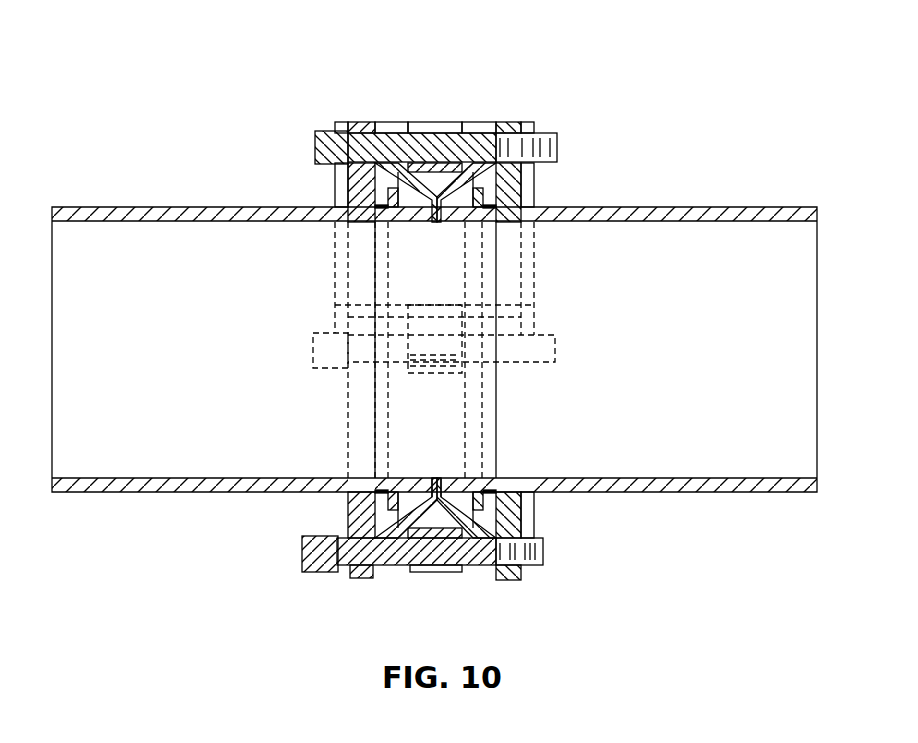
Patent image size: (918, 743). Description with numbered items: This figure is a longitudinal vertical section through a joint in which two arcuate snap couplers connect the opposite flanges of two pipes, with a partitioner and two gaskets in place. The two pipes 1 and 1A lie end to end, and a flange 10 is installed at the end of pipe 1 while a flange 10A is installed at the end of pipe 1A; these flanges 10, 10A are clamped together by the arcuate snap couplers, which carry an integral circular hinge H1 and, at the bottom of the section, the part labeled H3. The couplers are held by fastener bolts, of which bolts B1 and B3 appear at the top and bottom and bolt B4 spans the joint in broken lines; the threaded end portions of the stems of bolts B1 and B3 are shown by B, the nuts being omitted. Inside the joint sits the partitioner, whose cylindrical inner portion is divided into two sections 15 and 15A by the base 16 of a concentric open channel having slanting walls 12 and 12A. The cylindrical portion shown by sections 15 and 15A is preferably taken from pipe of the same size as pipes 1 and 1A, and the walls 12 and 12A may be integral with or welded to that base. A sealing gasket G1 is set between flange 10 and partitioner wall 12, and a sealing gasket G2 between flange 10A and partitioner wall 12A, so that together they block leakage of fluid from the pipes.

The pipe 1 is at (78, 208).
The pipe 1A is at (670, 207).
The flange 10 is at (363, 123).
The flange 10A is at (505, 128).
The threaded end portions of bolt stems B is at (557, 132).
The fastener bolt B1 is at (318, 140).
The fastener bolt B3 is at (303, 567).
The fastener bolt B4 is at (313, 348).
The integral circular hinge H1 is at (438, 165).
The spacer H3 is at (433, 573).
The cylindrical base section 15 is at (398, 207).
The cylindrical base section 15A is at (467, 207).
The base of concentric open channel 16 is at (433, 490).
The slanting wall 12 is at (415, 500).
The slanting wall 12A is at (462, 517).
The sealing gasket G1 is at (380, 518).
The sealing gasket G2 is at (497, 203).